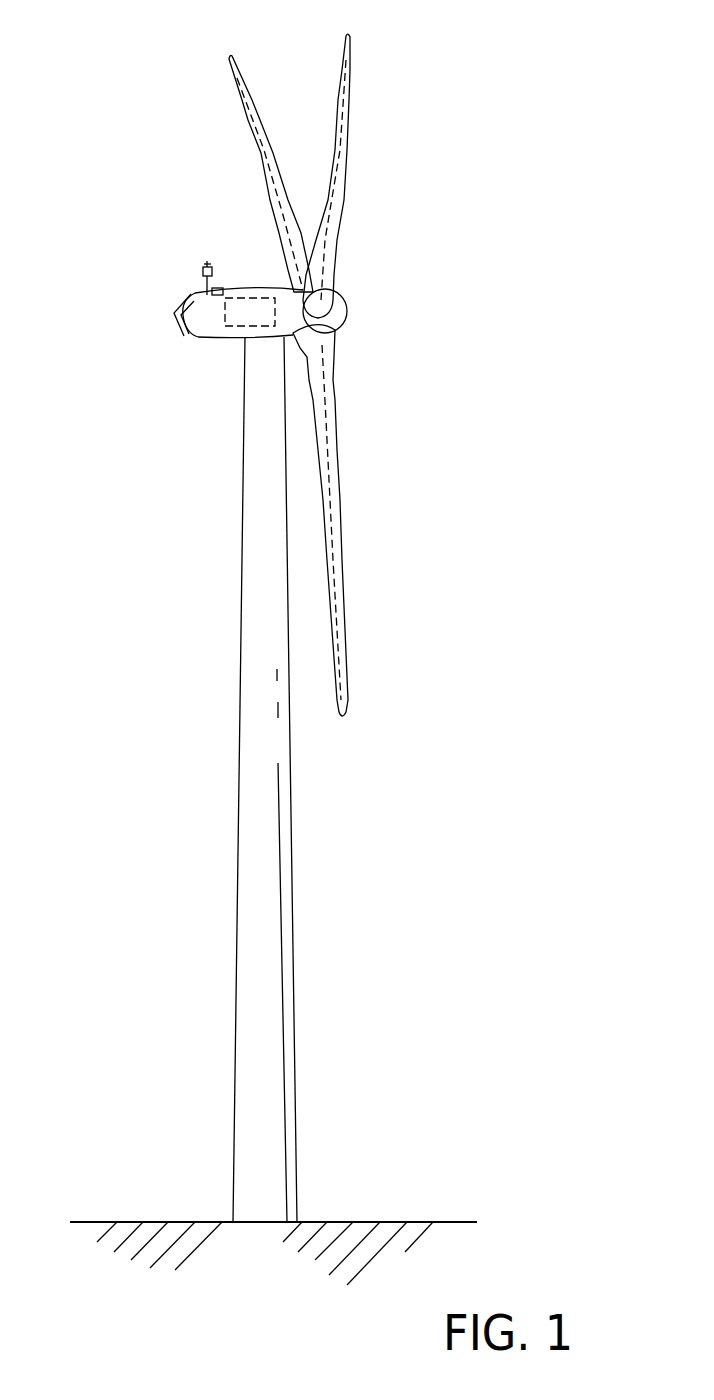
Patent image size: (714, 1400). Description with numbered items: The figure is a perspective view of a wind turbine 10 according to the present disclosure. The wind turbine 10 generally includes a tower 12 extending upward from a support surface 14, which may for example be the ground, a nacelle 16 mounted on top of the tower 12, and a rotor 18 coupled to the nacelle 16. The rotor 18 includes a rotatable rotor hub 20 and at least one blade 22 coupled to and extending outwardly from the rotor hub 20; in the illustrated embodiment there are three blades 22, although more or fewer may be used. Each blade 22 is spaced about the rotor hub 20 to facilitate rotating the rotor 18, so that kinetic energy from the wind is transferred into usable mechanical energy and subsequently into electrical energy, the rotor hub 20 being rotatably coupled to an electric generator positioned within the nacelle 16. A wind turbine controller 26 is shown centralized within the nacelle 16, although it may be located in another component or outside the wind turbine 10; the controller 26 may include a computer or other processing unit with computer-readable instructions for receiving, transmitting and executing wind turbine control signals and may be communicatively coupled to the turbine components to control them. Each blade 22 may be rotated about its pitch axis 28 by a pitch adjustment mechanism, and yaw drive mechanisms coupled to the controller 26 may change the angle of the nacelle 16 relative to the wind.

The wind turbine 10 is at (315, 648).
The tower 12 is at (252, 902).
The support surface 14 is at (158, 1222).
The nacelle 16 is at (222, 343).
The rotor 18 is at (323, 364).
The rotor hub 20 is at (347, 320).
The blade 22 is at (338, 78).
The wind turbine controller 26 is at (252, 300).
The pitch axis 28 is at (270, 213).